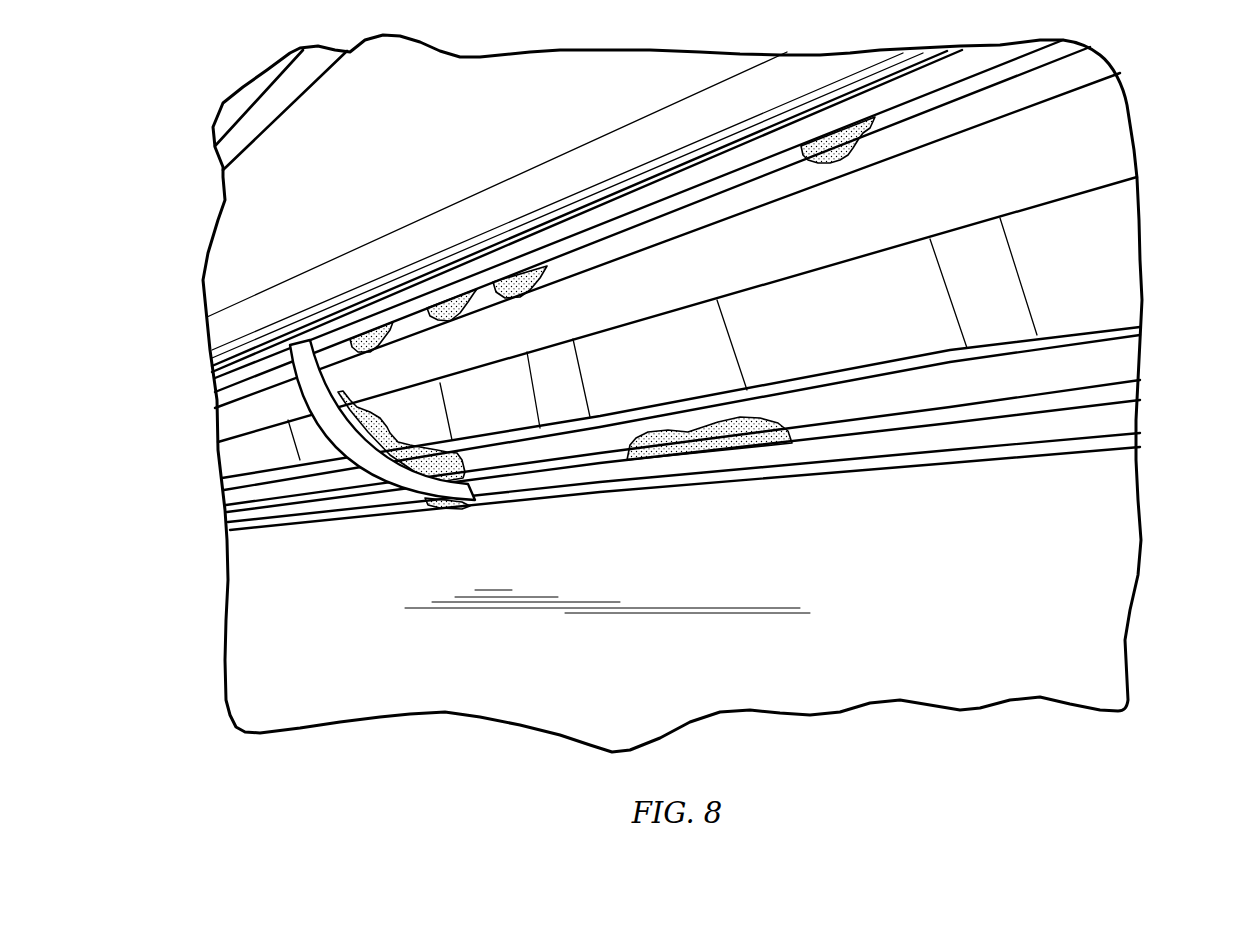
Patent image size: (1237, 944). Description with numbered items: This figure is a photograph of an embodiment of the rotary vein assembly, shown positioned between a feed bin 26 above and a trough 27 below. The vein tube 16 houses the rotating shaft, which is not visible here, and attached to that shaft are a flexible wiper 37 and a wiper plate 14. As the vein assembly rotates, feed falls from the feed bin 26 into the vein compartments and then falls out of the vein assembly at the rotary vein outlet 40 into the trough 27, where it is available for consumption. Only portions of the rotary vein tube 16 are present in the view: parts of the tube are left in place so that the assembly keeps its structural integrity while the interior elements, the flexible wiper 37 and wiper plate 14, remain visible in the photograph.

The wiper plate 14 is at (1080, 135).
The vein tube 16 is at (303, 398).
The feed bin 26 is at (260, 117).
The trough 27 is at (253, 643).
The flexible wiper 37 is at (1093, 242).
The rotary vein outlet 40 is at (1113, 362).